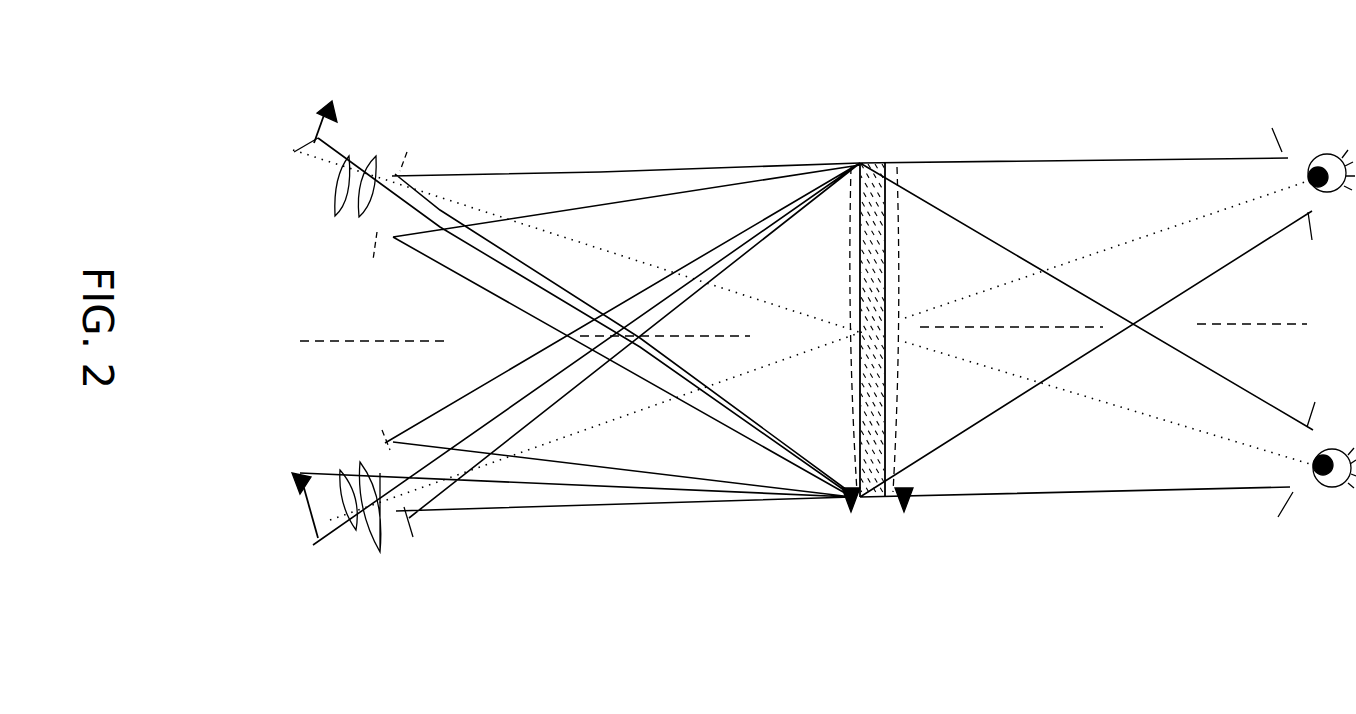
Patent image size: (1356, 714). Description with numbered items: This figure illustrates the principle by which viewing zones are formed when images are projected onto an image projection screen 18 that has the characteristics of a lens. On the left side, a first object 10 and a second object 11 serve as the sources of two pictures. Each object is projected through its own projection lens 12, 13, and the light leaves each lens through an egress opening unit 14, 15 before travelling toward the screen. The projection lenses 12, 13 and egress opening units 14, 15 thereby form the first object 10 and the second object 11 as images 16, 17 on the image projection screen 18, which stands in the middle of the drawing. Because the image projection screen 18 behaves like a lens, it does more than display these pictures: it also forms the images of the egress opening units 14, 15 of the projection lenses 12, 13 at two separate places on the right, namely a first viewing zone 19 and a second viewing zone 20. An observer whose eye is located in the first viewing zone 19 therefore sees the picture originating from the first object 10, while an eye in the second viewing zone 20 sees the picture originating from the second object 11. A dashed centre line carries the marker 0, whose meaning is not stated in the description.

The optical axis 0 is at (814, 324).
The first object 10 is at (322, 104).
The second object 11 is at (292, 483).
The projection lens 12 is at (365, 152).
The projection lens 13 is at (380, 552).
The egress opening unit 14 is at (370, 220).
The egress opening unit 15 is at (383, 465).
The image 16 is at (850, 217).
The image 17 is at (897, 213).
The image projection screen 18 is at (883, 500).
The first viewing zone 19 is at (1282, 148).
The second viewing zone 20 is at (1285, 505).